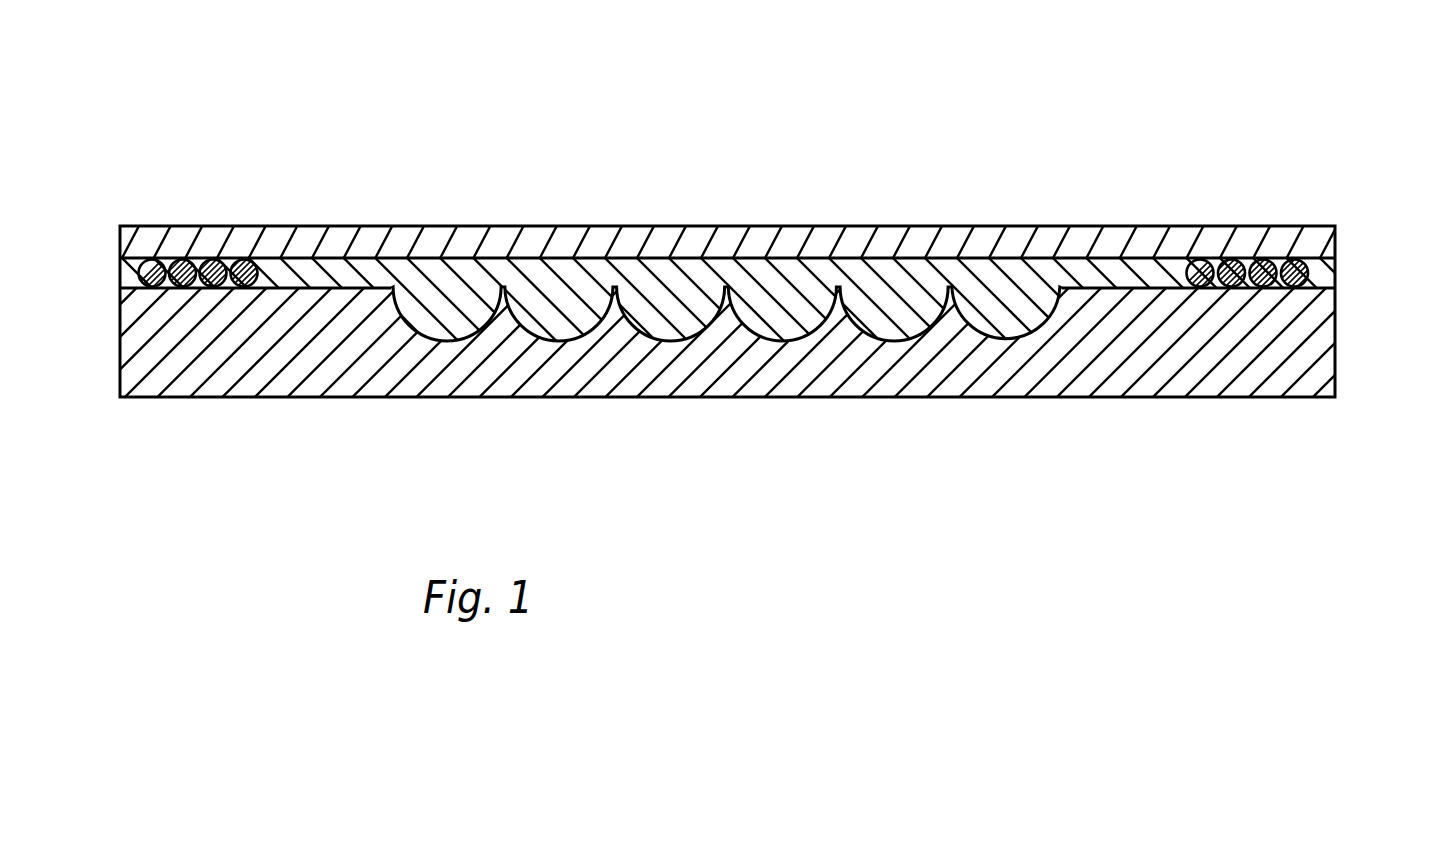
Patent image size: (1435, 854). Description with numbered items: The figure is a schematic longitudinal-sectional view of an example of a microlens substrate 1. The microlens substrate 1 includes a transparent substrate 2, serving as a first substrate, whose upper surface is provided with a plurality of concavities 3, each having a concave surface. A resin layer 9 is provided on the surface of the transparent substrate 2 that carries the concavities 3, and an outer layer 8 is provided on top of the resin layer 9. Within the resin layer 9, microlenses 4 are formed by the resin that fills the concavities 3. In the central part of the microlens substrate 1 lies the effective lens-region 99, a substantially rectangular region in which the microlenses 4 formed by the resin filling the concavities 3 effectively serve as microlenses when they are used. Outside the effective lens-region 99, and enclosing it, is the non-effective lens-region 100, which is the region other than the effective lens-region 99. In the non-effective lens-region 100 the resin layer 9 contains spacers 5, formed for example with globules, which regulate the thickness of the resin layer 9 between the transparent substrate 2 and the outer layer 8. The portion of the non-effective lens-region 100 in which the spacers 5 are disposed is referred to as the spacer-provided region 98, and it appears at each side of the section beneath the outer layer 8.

The microlens substrate 1 is at (1284, 141).
The transparent substrate 2 is at (1318, 348).
The concavities 3 is at (787, 342).
The microlenses 4 is at (560, 320).
The spacers 5 is at (212, 288).
The outer layer 8 is at (1320, 247).
The resin layer 9 is at (1320, 279).
The spacer-provided region 98 is at (258, 212).
The effective lens-region 99 is at (1060, 165).
The non-effective lens-region 100 is at (390, 165).